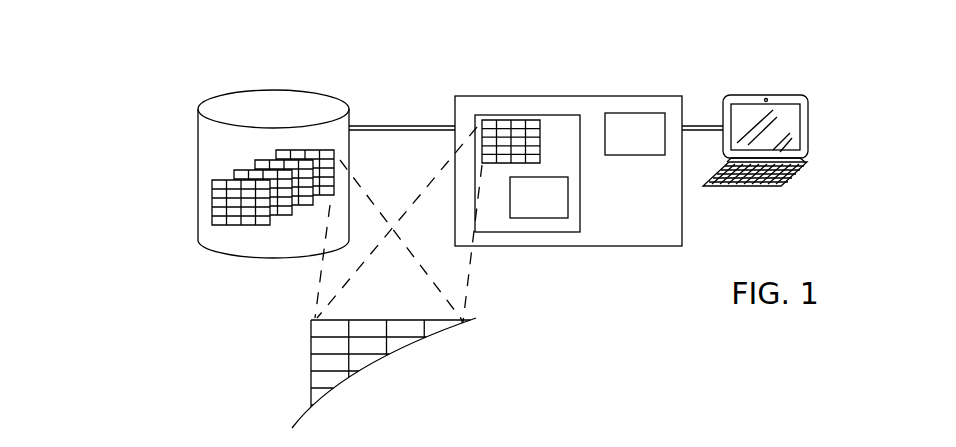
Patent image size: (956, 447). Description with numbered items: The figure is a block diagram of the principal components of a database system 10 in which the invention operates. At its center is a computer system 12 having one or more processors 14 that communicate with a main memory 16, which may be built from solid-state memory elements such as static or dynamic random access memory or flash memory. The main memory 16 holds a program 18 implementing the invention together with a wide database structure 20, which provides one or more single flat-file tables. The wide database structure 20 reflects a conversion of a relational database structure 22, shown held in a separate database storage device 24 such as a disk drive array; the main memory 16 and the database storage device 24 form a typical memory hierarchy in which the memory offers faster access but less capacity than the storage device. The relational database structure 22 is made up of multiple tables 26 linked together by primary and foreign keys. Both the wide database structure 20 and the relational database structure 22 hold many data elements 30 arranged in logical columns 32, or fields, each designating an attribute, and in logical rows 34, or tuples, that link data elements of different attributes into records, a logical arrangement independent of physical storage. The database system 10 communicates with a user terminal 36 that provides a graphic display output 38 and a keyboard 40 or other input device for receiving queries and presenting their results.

The database system 10 is at (205, 58).
The computer system 12 is at (652, 92).
The processors 14 is at (623, 147).
The main memory 16 is at (565, 232).
The program 18 is at (525, 210).
The wide database structure 20 is at (517, 120).
The relational database structure 22 is at (218, 163).
The database storage device 24 is at (196, 106).
The tables 26 is at (280, 226).
The data elements 30 is at (370, 343).
The logical columns 32 is at (368, 316).
The logical rows 34 is at (458, 350).
The user terminal 36 is at (779, 110).
The graphic display output 38 is at (787, 137).
The keyboard 40 is at (800, 168).